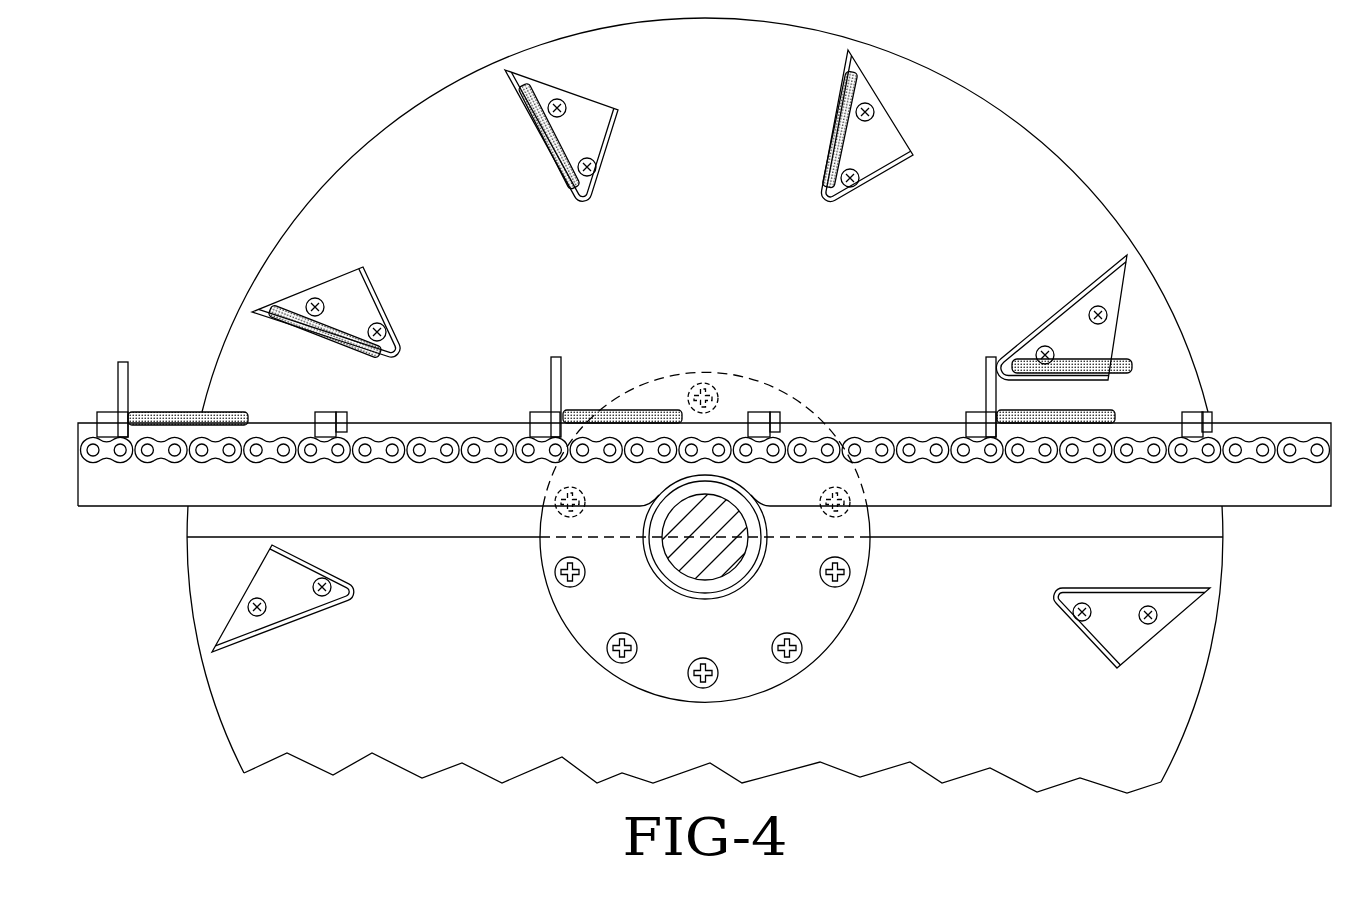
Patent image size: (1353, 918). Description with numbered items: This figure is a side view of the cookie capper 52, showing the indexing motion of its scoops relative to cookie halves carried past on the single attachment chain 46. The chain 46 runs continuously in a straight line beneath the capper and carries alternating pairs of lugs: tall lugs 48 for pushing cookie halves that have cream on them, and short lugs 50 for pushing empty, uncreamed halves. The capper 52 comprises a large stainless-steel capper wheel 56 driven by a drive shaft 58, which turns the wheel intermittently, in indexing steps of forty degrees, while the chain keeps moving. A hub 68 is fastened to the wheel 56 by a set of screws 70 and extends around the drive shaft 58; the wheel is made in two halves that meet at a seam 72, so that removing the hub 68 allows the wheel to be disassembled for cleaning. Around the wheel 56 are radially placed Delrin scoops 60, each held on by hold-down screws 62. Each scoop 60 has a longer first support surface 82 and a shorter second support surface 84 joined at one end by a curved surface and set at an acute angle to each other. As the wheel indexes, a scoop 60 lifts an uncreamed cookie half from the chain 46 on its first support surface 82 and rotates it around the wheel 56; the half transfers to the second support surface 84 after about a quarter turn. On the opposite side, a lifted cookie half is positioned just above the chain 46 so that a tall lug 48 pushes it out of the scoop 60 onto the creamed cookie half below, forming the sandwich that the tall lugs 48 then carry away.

The attachment chain 46 is at (1263, 422).
The tall lugs 48 is at (123, 365).
The short lugs 50 is at (776, 410).
The cookie capper 52 is at (1003, 102).
The capper wheel 56 is at (373, 173).
The drive shaft 58 is at (677, 560).
The scoop 60 is at (543, 153).
The hold-down screws 62 is at (595, 165).
The hub 68 is at (657, 677).
The screws 70 is at (782, 662).
The seam 72 is at (945, 540).
The first support surface 82 is at (1043, 315).
The second support surface 84 is at (380, 290).